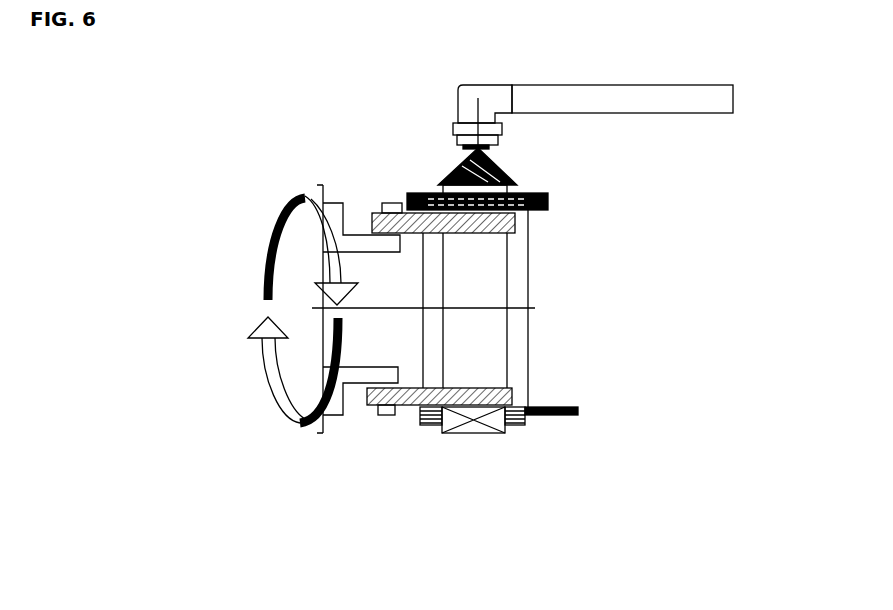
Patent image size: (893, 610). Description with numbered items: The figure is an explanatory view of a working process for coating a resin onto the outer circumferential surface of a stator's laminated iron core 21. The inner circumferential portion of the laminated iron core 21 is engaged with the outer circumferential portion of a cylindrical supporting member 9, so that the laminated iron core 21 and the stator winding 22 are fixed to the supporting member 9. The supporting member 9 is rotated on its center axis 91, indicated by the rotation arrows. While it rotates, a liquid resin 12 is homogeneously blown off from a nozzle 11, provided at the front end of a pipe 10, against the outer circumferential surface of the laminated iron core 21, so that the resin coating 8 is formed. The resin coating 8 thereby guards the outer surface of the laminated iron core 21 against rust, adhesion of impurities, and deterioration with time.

The resin coating 8 is at (453, 433).
The cylindrical supporting member 9 is at (377, 212).
The pipe 10 is at (658, 110).
The nozzle 11 is at (457, 149).
The liquid resin 12 is at (500, 160).
The laminated iron core 21 is at (475, 427).
The stator winding 22 is at (548, 212).
The center axis 91 is at (492, 309).